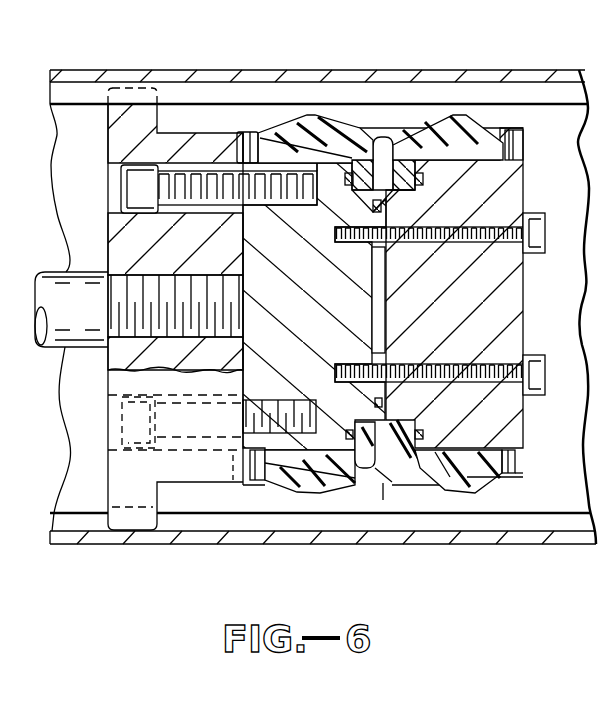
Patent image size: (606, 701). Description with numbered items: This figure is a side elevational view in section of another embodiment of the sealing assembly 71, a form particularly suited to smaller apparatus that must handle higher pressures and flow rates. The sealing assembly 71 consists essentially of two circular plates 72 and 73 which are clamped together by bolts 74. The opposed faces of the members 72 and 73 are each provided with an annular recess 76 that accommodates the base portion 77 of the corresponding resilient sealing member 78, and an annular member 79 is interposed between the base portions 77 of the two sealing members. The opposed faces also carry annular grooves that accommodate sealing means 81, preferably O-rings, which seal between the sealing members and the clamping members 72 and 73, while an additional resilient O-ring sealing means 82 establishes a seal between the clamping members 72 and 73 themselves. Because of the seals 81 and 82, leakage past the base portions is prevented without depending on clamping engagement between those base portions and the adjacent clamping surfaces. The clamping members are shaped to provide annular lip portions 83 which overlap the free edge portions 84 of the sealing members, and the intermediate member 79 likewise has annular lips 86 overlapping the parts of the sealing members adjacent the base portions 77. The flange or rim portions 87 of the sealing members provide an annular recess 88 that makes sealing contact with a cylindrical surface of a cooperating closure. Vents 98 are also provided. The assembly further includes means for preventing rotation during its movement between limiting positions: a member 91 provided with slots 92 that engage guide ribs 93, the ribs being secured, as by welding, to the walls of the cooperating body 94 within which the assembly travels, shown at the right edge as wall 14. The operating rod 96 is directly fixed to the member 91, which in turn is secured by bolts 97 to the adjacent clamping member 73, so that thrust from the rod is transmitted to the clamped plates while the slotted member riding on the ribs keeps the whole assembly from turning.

The wall 14 is at (592, 307).
The sealing assembly 71 is at (395, 460).
The plate 72 is at (517, 405).
The plate 73 is at (280, 355).
The bolts 74 is at (506, 233).
The annular recess 76 is at (403, 426).
The base portion 77 is at (410, 425).
The resilient sealing member 78 is at (367, 472).
The annular member 79 is at (383, 483).
The sealing means 81 is at (353, 432).
The additional sealing means 82 is at (380, 403).
The annular lip portion 83 is at (523, 480).
The free edge portion 84 is at (510, 463).
The annular lip 86 is at (410, 478).
The flange or rim portion 87 is at (450, 477).
The annular recess 88 is at (467, 493).
The member 91 is at (123, 240).
The slots 92 is at (140, 120).
The guide ribs 93 is at (253, 93).
The cooperating body 94 is at (432, 78).
The operating rod 96 is at (91, 312).
The bolts 97 is at (196, 180).
The vents 98 is at (248, 157).